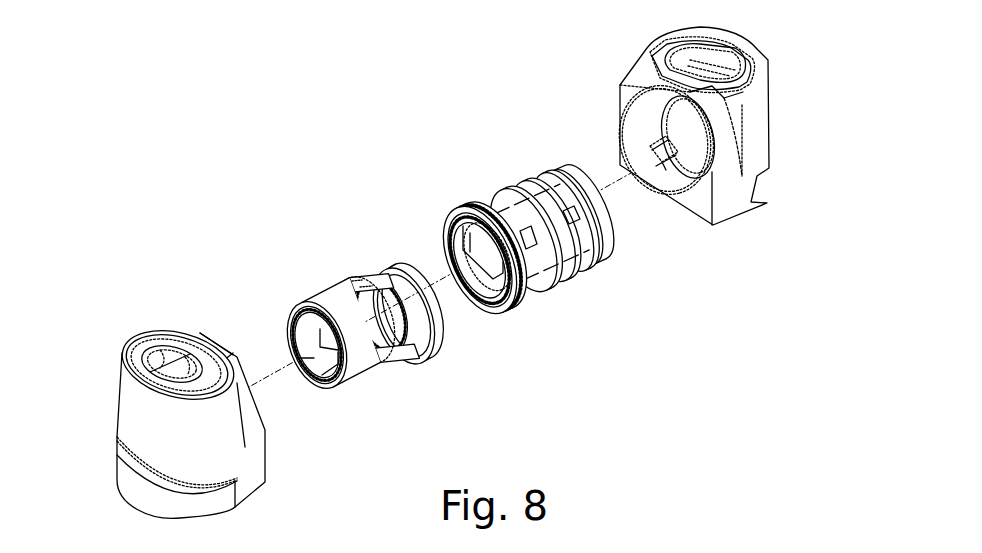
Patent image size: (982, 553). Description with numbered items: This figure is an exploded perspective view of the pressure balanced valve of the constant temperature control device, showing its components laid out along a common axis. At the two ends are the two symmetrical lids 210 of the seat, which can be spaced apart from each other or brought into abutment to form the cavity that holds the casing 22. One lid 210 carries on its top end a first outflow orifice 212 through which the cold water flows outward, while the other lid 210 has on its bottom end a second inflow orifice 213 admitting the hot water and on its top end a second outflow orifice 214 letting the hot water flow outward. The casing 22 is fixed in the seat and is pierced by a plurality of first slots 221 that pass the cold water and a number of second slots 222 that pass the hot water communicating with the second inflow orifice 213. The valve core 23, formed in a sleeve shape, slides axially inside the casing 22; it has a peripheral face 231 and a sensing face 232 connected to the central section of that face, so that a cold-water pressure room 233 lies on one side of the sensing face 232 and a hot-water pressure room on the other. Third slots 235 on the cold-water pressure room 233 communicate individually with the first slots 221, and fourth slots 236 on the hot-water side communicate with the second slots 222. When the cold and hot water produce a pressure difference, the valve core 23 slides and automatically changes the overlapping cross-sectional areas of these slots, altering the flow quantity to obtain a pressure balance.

The lid 210 is at (448, 269).
The first outflow orifice 212 is at (172, 352).
The second inflow orifice 213 is at (677, 168).
The second outflow orifice 214 is at (738, 58).
The casing 22 is at (518, 239).
The first slot 221 is at (546, 286).
The second slot 222 is at (552, 182).
The valve core 23 is at (391, 326).
The peripheral face 231 is at (425, 336).
The sensing face 232 is at (378, 362).
The cold-water pressure room 233 is at (325, 384).
The third slot 235 is at (352, 296).
The fourth slot 236 is at (423, 332).